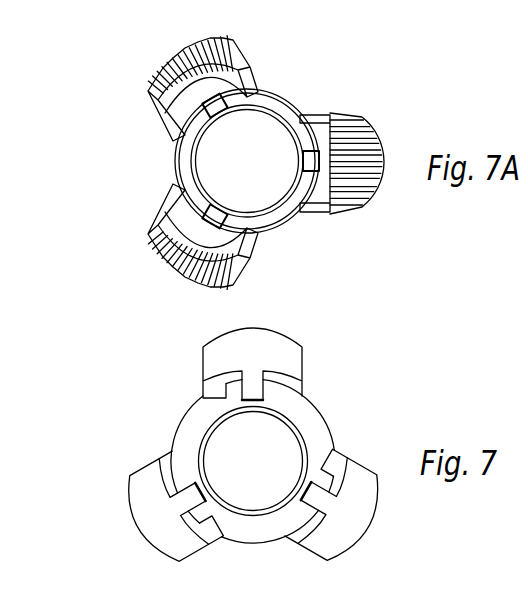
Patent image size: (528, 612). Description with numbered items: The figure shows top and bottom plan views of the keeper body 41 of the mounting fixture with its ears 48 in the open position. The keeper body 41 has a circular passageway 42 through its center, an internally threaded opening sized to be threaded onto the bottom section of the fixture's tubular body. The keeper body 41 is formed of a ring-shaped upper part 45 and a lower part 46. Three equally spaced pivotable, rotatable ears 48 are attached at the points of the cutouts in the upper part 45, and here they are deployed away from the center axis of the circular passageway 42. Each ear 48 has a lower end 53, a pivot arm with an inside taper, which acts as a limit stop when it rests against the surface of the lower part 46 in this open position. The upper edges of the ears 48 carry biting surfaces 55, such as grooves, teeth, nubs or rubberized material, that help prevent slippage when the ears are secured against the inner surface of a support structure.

In FIG. 7, the keeper body 41 is at (295, 456).
In FIG. 7A, the circular passageway 42 is at (255, 190).
In FIG. 7, the circular passageway 42 is at (237, 475).
In FIG. 7A, the upper part 45 is at (247, 161).
In FIG. 7, the upper part 45 is at (326, 417).
In FIG. 7, the lower part 46 is at (253, 512).
In FIG. 7A, the ears 48 is at (268, 65).
In FIG. 7, the ears 48 is at (322, 359).
In FIG. 7A, the lower end 53 is at (373, 165).
In FIG. 7, the lower end 53 is at (372, 518).
In FIG. 7A, the biting surfaces 55 is at (364, 138).